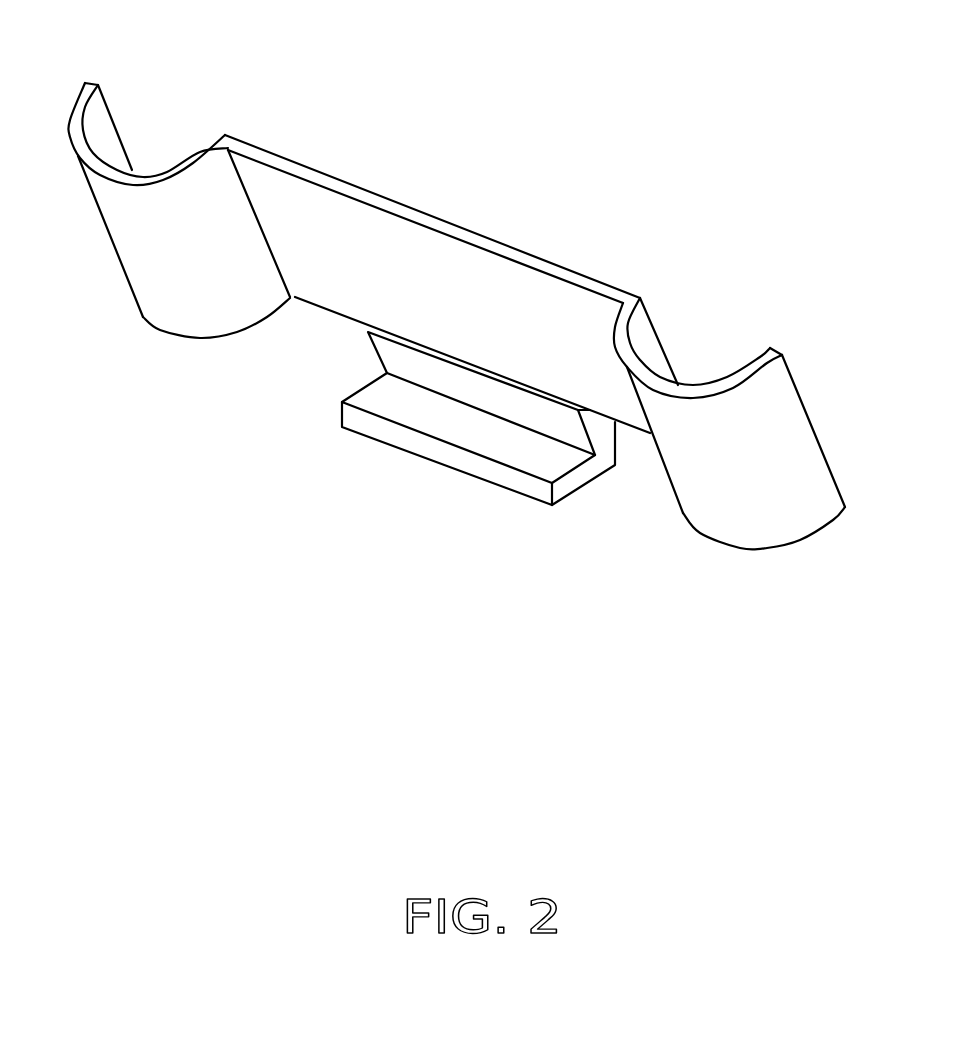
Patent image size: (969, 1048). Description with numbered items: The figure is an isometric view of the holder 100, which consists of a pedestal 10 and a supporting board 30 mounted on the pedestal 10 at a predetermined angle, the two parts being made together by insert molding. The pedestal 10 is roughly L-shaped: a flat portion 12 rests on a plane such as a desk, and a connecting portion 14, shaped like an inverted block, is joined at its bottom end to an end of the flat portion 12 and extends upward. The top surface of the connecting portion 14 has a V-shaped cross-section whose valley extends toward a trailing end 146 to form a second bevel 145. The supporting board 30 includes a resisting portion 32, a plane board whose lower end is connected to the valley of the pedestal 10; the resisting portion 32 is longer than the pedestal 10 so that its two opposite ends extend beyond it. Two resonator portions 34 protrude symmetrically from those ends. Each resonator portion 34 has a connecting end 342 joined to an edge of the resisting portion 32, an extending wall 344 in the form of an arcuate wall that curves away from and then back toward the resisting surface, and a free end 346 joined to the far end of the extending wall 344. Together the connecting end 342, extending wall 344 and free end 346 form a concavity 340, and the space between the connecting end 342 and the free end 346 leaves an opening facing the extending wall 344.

The holder 100 is at (432, 40).
The pedestal 10 is at (635, 607).
The flat portion 12 is at (567, 487).
The connecting portion 14 is at (603, 432).
The second bevel 145 is at (468, 363).
The trailing end 146 is at (423, 353).
The supporting board 30 is at (323, 78).
The resisting portion 32 is at (287, 165).
The resonator portion 34 is at (200, 195).
The concavity 340 is at (707, 358).
The connecting end 342 is at (637, 300).
The extending wall 344 is at (790, 500).
The free end 346 is at (777, 350).